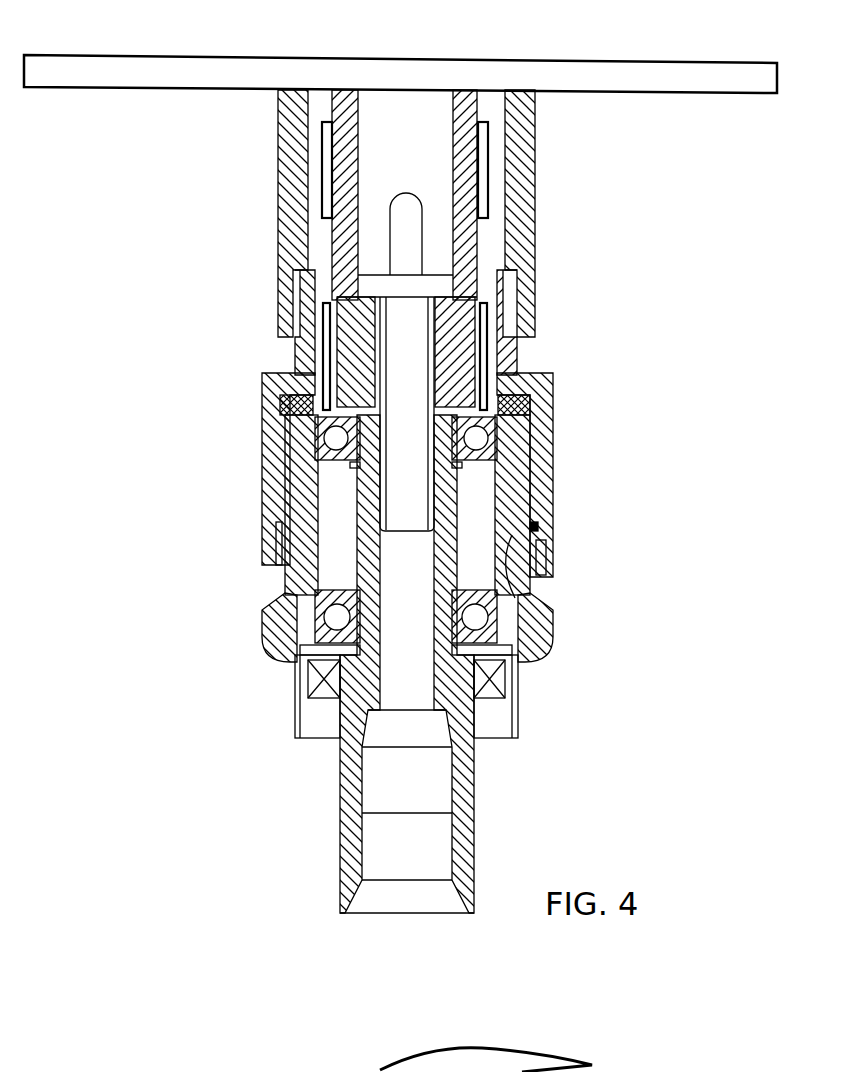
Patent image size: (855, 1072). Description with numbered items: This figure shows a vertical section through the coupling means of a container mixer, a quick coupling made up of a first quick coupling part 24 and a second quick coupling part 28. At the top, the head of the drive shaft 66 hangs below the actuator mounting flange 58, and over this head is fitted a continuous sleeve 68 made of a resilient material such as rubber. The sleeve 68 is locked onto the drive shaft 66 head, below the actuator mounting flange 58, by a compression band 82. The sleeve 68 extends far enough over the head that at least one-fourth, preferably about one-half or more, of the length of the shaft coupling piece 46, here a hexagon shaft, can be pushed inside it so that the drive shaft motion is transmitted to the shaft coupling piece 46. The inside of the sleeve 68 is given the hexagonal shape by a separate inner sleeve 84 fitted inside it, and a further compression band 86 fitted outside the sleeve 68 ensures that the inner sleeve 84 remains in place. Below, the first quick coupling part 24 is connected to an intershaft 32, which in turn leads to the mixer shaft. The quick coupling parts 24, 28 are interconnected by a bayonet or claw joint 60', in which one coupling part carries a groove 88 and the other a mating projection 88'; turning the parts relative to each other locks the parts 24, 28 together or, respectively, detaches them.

The actuator mounting flange 58 is at (145, 66).
The drive shaft 66 is at (394, 106).
The compression band 82 is at (487, 173).
The sleeve 68 is at (466, 258).
The inner sleeve 84 is at (510, 300).
The compression band 86 is at (483, 375).
The shaft coupling piece 46 is at (403, 357).
The quick coupling part 28 is at (540, 440).
The groove 88 is at (581, 528).
The bayonet or claw joint 60' is at (645, 538).
The projection 88' is at (616, 587).
The quick coupling part 24 is at (300, 572).
The intershaft 32 is at (350, 828).